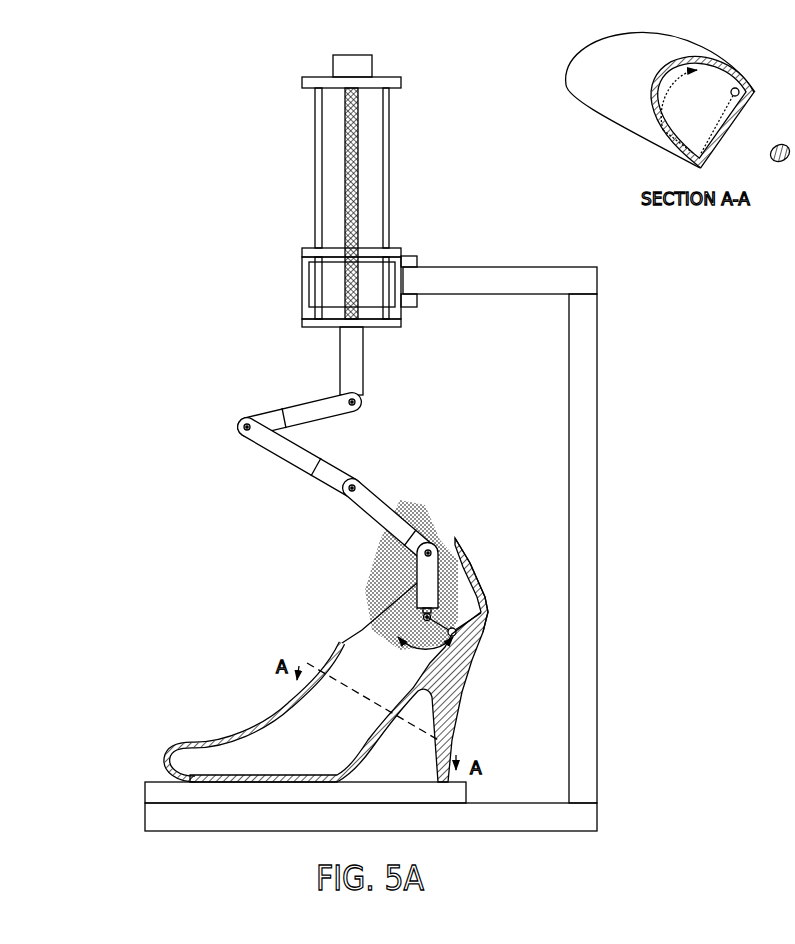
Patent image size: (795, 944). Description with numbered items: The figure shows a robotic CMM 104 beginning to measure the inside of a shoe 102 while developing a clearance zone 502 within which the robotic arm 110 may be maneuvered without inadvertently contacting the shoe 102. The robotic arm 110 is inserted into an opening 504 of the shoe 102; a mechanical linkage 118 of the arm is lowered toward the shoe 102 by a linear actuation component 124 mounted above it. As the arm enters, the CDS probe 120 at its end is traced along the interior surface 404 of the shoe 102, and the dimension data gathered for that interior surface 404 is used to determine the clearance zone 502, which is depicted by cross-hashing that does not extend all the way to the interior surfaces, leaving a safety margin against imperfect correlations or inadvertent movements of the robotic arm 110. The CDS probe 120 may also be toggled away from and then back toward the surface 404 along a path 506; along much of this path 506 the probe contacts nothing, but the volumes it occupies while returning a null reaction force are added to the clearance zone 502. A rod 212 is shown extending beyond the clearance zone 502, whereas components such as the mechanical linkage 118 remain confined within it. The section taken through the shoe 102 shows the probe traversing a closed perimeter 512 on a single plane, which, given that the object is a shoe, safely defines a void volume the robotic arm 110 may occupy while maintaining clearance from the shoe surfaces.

The shoe 102 is at (254, 729).
The robotic CMM 104 is at (246, 110).
The robotic arm 110 is at (300, 449).
The mechanical linkage 118 is at (353, 510).
The CDS probe 120 is at (489, 608).
The linear actuation component 124 is at (280, 250).
The rod 212 is at (457, 611).
The interior surface 404 is at (450, 565).
The clearance zone 502 is at (435, 523).
The opening 504 is at (370, 599).
The path 506 is at (455, 680).
The perimeter 512 is at (640, 124).